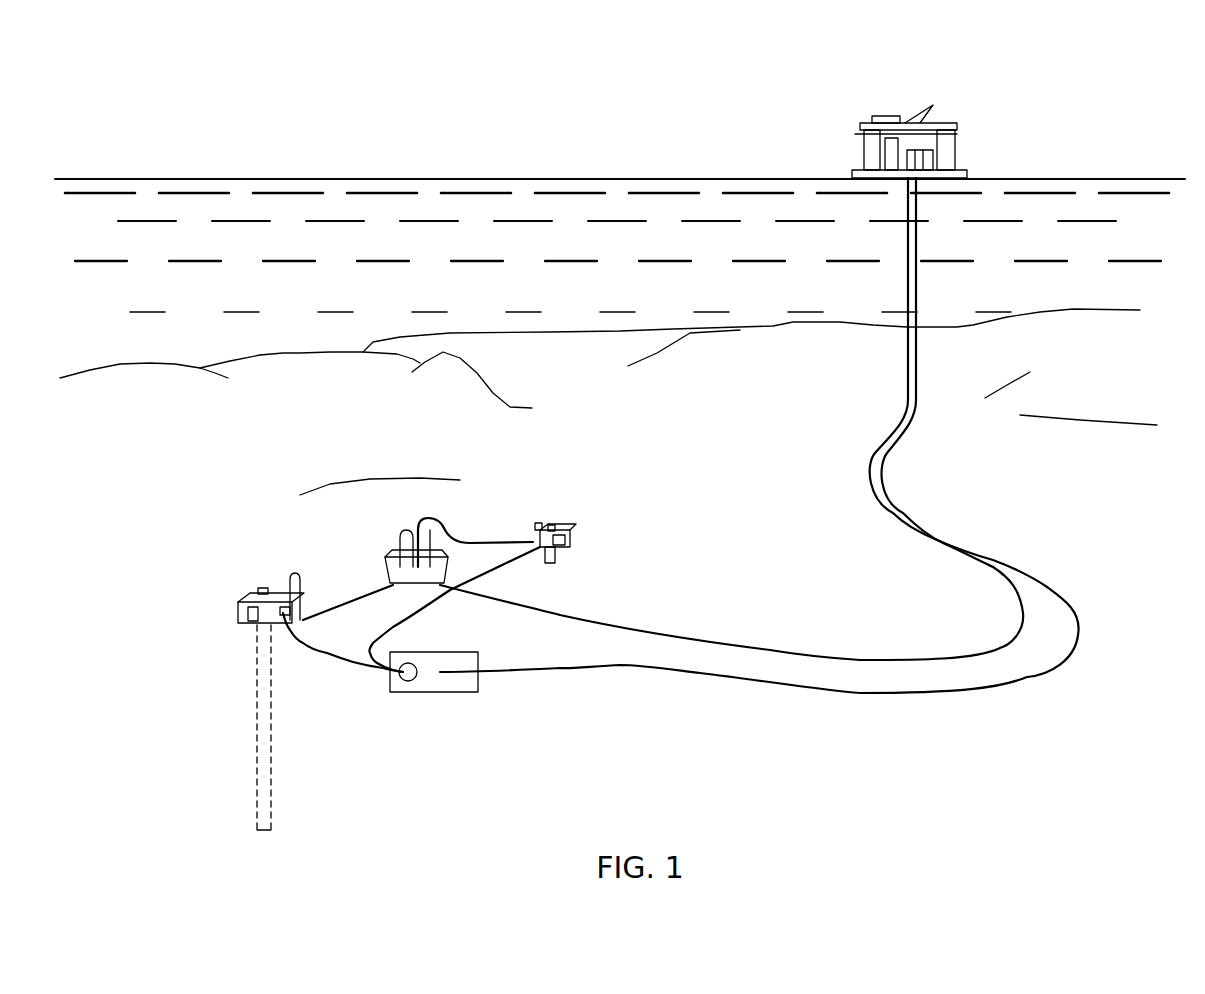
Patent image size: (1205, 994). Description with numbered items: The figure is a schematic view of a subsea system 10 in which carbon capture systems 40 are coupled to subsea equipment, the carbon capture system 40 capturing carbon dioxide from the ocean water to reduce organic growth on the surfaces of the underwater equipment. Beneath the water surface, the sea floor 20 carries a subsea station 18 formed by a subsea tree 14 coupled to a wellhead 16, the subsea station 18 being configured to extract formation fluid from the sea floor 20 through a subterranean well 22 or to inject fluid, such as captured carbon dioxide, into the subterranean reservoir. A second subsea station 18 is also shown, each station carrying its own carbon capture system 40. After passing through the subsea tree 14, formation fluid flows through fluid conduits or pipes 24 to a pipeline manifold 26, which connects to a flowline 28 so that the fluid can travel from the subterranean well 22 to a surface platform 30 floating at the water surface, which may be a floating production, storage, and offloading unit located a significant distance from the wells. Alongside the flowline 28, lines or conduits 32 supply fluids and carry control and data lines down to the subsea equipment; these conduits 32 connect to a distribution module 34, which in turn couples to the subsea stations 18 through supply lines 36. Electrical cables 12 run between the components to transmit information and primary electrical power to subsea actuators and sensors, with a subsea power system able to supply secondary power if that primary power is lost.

The subsea system 10 is at (226, 97).
The electrical cables 12 is at (296, 640).
The subsea tree 14 is at (242, 612).
The wellhead 16 is at (260, 632).
The subsea station 18 is at (378, 579).
The sea floor 20 is at (1092, 533).
The subterranean well 22 is at (256, 815).
The fluid conduits or pipes 24 is at (352, 604).
The pipeline manifold 26 is at (384, 536).
The flowlines 28 is at (712, 645).
The surface platform 30 is at (968, 148).
The lines or conduits 32 is at (840, 692).
The distribution module 34 is at (438, 694).
The supply lines 36 is at (415, 612).
The carbon capture system 40 is at (248, 612).